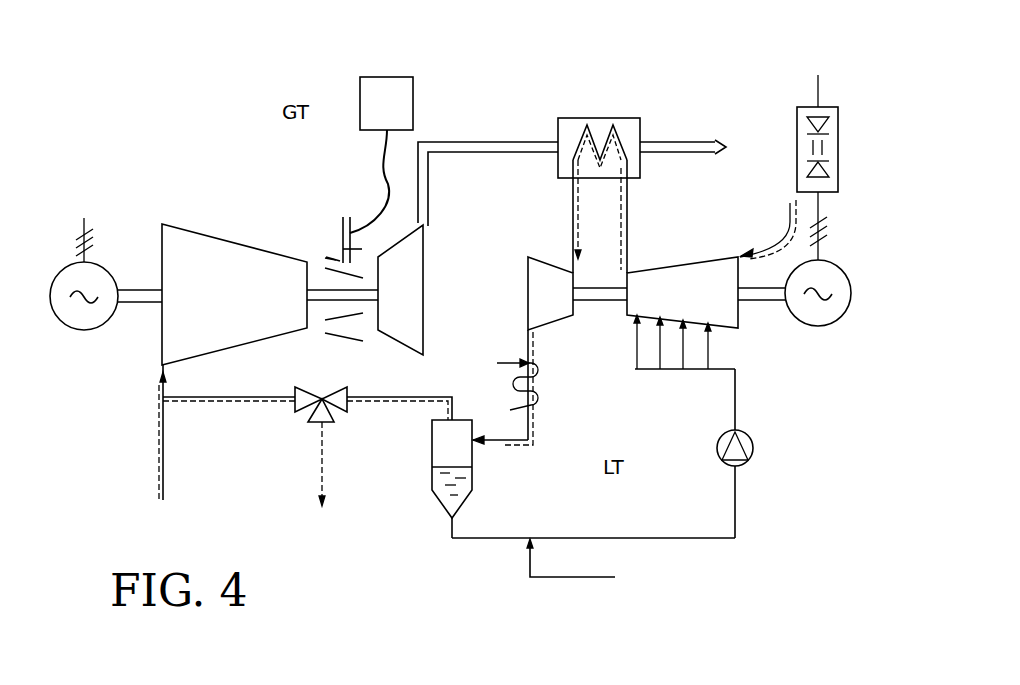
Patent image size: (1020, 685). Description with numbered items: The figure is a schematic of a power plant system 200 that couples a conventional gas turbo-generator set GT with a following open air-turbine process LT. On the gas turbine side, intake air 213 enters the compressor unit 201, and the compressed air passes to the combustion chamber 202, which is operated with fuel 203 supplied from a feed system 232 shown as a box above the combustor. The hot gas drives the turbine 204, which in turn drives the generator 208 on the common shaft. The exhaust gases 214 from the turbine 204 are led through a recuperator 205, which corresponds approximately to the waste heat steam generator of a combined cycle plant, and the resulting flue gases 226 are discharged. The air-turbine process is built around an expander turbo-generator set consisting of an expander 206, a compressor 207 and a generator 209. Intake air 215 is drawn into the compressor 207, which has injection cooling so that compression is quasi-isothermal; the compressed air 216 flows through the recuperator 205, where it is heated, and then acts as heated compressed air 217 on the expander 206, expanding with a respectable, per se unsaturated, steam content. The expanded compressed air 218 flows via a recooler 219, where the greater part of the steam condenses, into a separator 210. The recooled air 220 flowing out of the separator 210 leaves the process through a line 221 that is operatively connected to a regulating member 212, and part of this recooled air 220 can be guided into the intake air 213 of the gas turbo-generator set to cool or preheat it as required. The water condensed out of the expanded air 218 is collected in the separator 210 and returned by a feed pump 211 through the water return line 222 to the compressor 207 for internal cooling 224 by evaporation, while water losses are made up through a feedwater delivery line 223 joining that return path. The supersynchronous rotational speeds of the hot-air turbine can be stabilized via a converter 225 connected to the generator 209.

The power plant system 200 is at (291, 234).
The compressor unit 201 is at (246, 309).
The combustion chamber 202 is at (333, 251).
The fuel 203 is at (350, 223).
The turbine 204 is at (424, 263).
The recuperator 205 is at (600, 126).
The expander 206 is at (540, 291).
The compressor 207 is at (705, 303).
The generator 208 is at (84, 331).
The generator 209 is at (815, 316).
The separator 210 is at (431, 481).
The feed pump 211 is at (754, 441).
The regulating member 212 is at (318, 404).
The intake air 213 is at (160, 466).
The exhaust gases 214 is at (480, 145).
The intake air 215 is at (786, 241).
The compressed air 216 is at (628, 212).
The heated compressed air 217 is at (572, 212).
The expanded compressed air 218 is at (536, 345).
The recooler 219 is at (547, 397).
The recooled air 220 is at (402, 401).
The line 221 is at (326, 465).
The feed water line 222 is at (735, 504).
The feedwater delivery line 223 is at (578, 578).
The internal cooling 224 is at (713, 381).
The converter 225 is at (797, 147).
The flue gases 226 is at (663, 148).
The system 232 is at (360, 89).